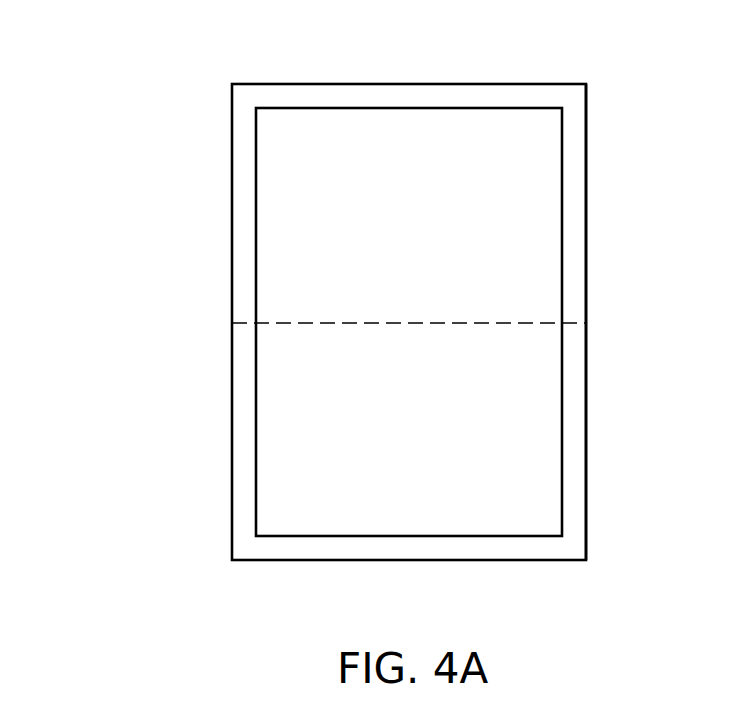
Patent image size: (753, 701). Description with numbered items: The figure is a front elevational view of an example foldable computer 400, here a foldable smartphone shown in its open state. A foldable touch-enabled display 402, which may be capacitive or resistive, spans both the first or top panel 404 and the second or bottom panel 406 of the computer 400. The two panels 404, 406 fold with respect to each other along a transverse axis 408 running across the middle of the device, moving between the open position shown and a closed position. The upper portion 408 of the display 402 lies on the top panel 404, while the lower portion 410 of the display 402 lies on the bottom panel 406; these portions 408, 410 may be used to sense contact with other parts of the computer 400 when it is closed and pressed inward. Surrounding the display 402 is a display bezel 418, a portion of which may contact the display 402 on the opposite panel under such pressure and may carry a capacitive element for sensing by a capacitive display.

The foldable computer 400 is at (142, 70).
The foldable touch-enabled display 402 is at (283, 243).
The first/top panel 404 is at (587, 210).
The second/bottom panel 406 is at (587, 453).
The upper portion of the display 408 is at (325, 150).
The lower portion of the display 410 is at (325, 518).
The display bezel 418 is at (412, 98).